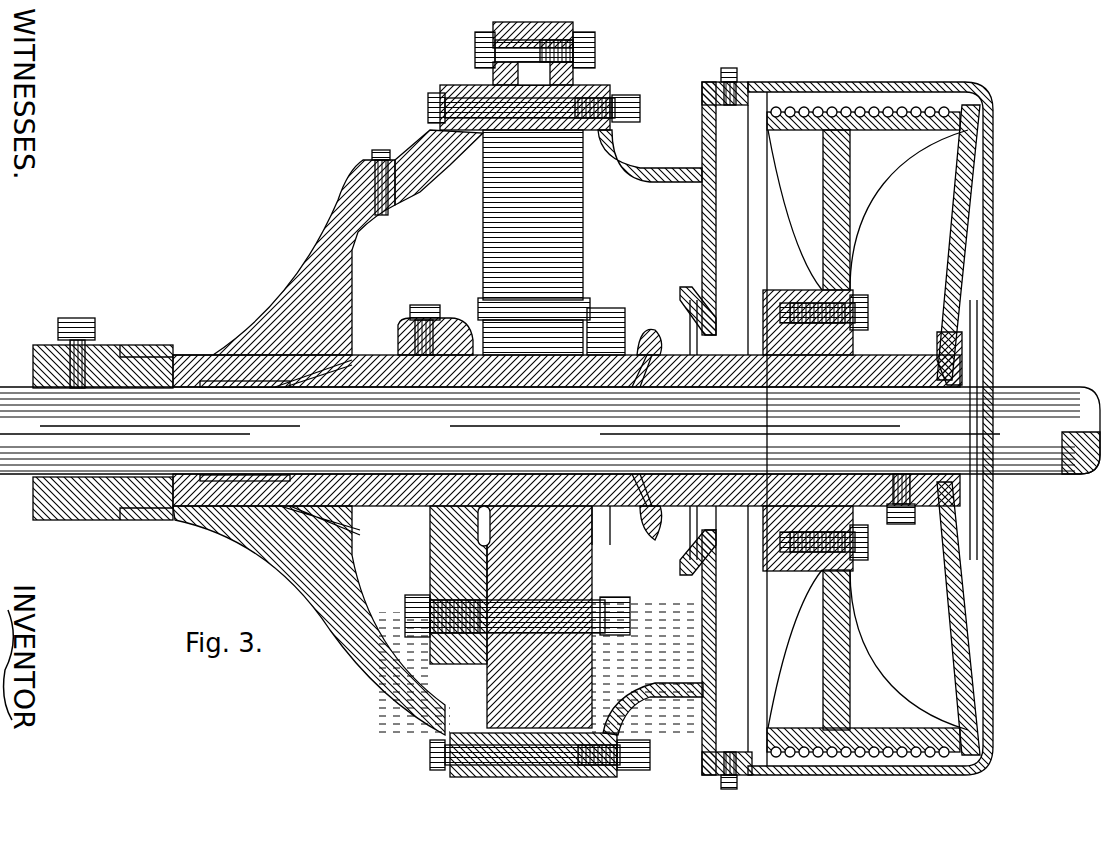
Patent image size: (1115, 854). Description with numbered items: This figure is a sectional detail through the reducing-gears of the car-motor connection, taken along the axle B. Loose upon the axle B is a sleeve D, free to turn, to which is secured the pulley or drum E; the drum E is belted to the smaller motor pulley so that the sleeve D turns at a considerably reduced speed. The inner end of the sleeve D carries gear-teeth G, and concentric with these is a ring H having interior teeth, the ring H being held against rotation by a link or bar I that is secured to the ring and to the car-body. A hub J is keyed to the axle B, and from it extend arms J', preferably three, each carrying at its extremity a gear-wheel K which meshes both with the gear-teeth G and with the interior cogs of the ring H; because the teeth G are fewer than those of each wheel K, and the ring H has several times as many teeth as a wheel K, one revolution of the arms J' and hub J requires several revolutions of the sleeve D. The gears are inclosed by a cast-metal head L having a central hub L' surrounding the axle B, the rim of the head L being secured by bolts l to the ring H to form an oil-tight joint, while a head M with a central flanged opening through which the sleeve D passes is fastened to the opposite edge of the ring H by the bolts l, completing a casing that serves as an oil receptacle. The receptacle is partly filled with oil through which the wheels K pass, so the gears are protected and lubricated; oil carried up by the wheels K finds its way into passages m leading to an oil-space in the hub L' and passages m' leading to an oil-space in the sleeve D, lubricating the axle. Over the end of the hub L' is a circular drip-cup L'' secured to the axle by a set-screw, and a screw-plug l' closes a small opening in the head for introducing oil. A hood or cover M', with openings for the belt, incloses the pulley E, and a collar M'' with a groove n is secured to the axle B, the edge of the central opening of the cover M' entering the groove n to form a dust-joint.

The axle B is at (550, 431).
The drip-cup L'' is at (103, 439).
The central hub L' is at (566, 458).
The cast-metal head L is at (438, 432).
The screw-plug l' is at (365, 178).
The ring H is at (597, 88).
The bolts l is at (525, 431).
The link or bar I is at (528, 22).
The gear-wheel K is at (583, 285).
The passages m is at (374, 420).
The passages m' is at (624, 426).
The head M is at (710, 428).
The hood or cover M' is at (888, 428).
The collar M'' is at (843, 427).
The pulley or drum E is at (865, 429).
The groove n is at (918, 525).
The hub J is at (499, 616).
The arms J' is at (513, 601).
The gear-teeth G is at (602, 525).
The sleeve D is at (728, 520).
The fluid k is at (642, 670).